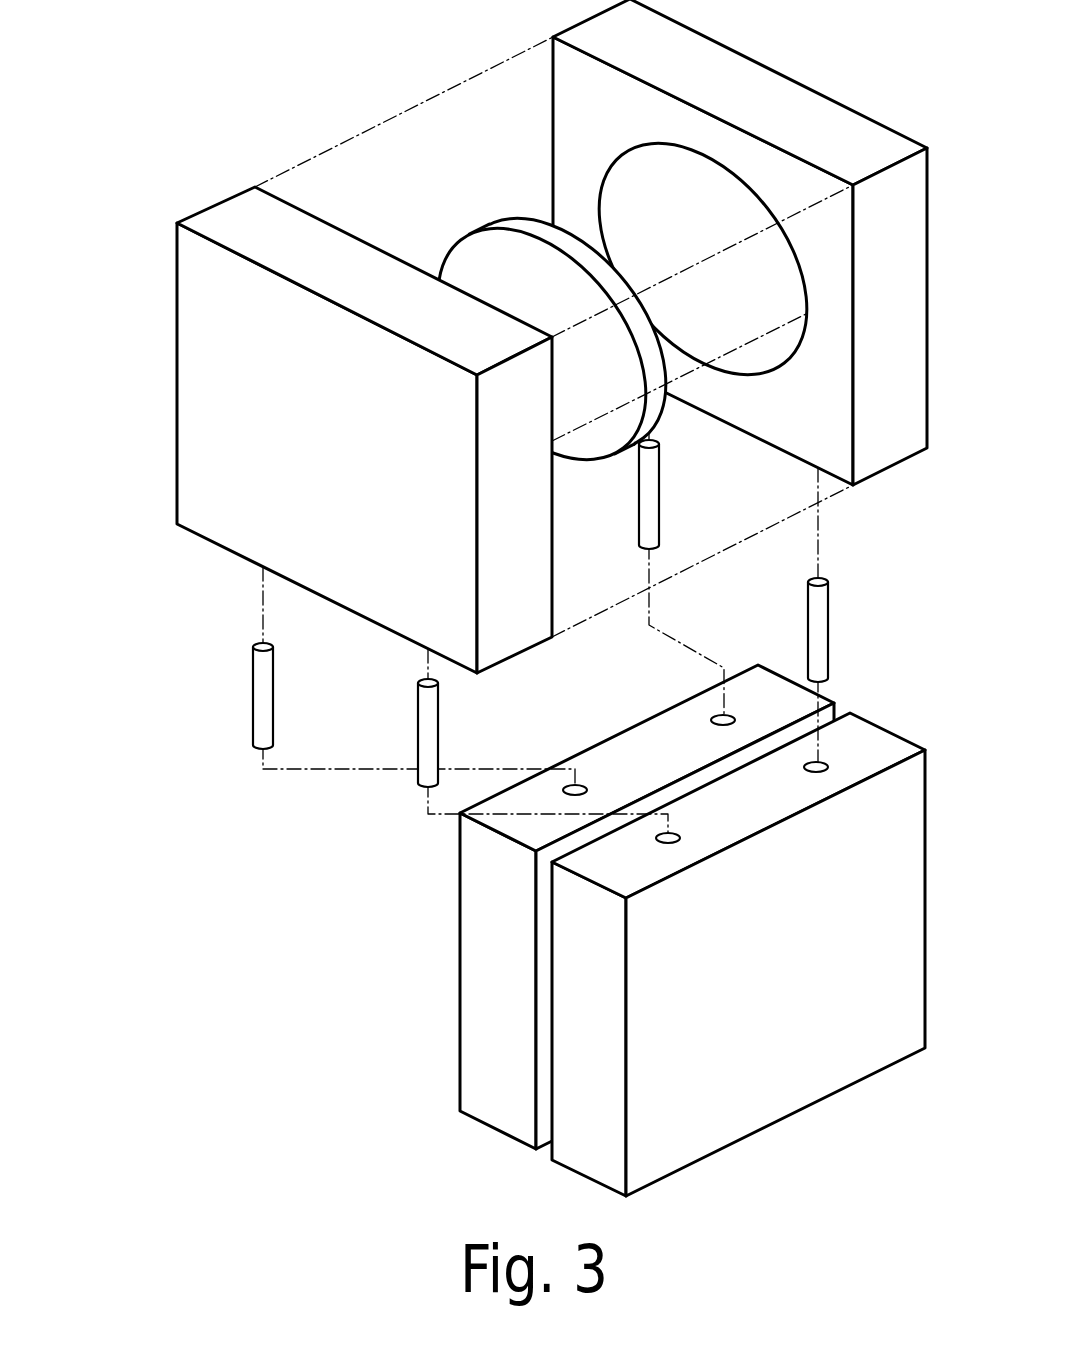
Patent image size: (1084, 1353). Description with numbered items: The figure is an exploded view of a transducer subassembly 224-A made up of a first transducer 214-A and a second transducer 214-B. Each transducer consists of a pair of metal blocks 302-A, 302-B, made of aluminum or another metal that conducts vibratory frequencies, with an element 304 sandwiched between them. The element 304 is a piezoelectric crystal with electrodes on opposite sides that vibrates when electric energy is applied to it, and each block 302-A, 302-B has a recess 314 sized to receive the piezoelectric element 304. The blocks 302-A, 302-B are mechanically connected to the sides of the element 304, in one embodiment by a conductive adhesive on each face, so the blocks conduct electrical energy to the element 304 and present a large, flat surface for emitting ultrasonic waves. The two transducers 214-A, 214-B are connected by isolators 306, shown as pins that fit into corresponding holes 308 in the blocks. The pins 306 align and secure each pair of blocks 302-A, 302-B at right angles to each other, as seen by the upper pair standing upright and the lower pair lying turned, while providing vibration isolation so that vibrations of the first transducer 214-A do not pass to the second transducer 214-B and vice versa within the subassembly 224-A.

The block 302-A is at (252, 186).
The block 302-B is at (553, 95).
The element 304 is at (508, 220).
The isolators 306 is at (274, 670).
The holes 308 is at (866, 742).
The recess 314 is at (808, 310).
The first transducer 214-A is at (170, 646).
The second transducer 214-B is at (368, 932).
The transducer subassembly 224-A is at (180, 1160).